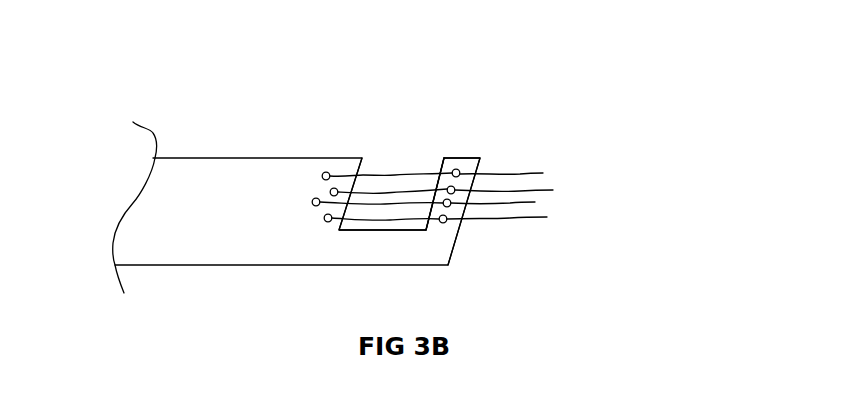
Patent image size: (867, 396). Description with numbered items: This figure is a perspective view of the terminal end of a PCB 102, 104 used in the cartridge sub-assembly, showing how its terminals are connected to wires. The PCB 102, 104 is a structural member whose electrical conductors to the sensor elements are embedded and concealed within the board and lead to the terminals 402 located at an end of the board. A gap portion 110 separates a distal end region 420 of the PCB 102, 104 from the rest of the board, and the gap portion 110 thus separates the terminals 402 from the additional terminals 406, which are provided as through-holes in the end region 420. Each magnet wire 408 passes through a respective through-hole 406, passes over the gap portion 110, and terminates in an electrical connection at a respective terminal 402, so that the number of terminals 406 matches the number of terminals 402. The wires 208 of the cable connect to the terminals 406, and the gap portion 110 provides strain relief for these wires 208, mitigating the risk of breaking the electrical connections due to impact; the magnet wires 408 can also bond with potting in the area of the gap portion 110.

The PCB 102 is at (313, 109).
The PCB 104 is at (296, 190).
The gap portion 110 is at (428, 167).
The wires 208 is at (537, 163).
The terminals 402 is at (337, 189).
The terminals 406 is at (454, 192).
The magnet wire 408 is at (420, 202).
The distal end region 420 is at (470, 167).